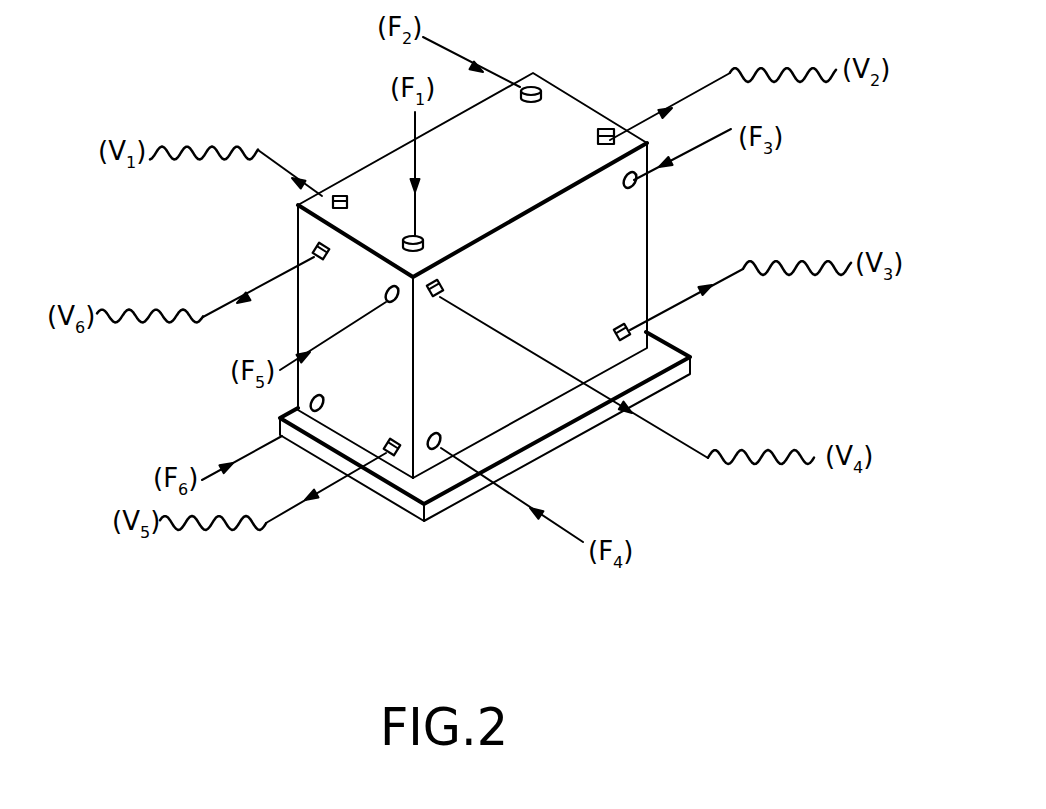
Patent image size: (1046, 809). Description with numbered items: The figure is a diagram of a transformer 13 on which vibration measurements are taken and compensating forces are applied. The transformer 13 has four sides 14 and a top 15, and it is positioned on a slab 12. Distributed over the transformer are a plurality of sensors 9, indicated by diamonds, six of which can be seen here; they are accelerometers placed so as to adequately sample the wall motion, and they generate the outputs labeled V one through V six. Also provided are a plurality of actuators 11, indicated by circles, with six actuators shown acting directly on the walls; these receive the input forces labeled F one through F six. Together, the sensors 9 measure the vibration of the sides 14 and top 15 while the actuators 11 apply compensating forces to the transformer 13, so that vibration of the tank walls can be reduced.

The sensors 9 is at (340, 195).
The actuators 11 is at (422, 240).
The slab 12 is at (536, 450).
The transformer 13 is at (461, 255).
The sides 14 is at (627, 258).
The top 15 is at (577, 104).